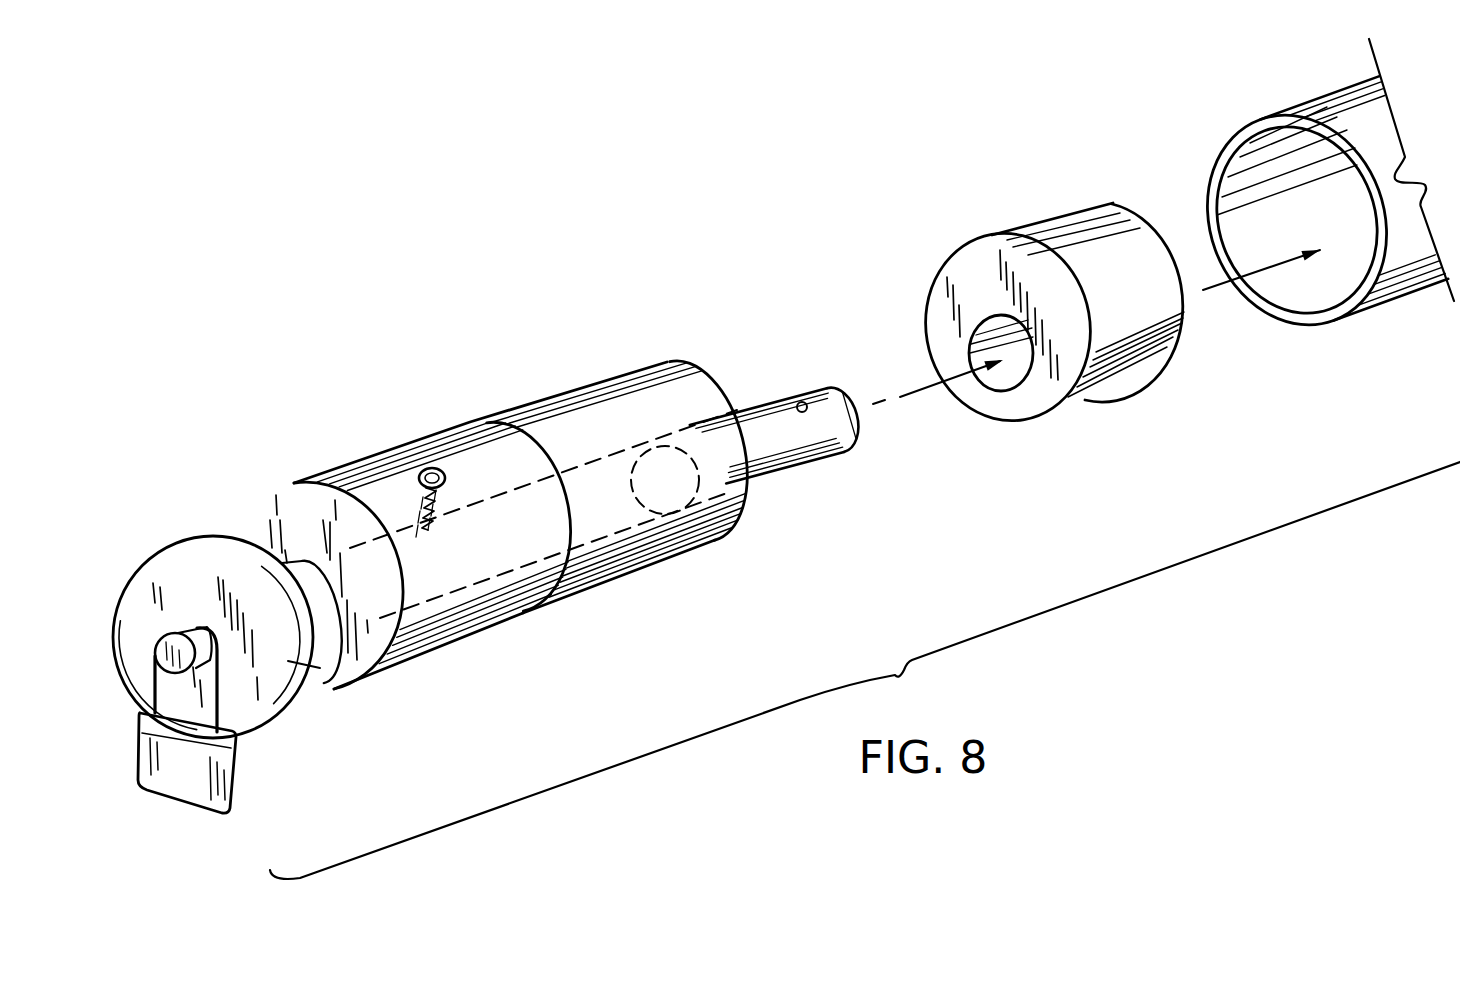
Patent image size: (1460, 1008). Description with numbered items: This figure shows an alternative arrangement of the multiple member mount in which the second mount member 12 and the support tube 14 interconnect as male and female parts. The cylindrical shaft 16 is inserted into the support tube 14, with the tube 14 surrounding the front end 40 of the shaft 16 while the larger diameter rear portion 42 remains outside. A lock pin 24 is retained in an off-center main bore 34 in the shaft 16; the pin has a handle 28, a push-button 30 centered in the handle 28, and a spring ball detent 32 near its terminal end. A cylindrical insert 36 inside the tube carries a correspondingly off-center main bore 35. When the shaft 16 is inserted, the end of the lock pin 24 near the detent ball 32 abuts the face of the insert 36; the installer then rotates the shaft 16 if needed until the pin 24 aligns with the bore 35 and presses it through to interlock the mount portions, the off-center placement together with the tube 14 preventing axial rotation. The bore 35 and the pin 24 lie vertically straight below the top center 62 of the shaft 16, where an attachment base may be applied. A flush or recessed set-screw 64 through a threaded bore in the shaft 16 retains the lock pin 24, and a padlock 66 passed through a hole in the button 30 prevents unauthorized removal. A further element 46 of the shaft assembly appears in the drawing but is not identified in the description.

The second mount member 12 is at (614, 300).
The support tube 14 is at (1313, 107).
The cylindrical shaft 16 is at (552, 398).
The lock pin 24 is at (773, 400).
The handle 28 is at (223, 540).
The push-button 30 is at (176, 630).
The spring ball detent 32 is at (808, 392).
The main bore 34 is at (347, 610).
The main bore 35 is at (1017, 368).
The cylindrical insert 36 is at (1020, 222).
The front end of shaft 40 is at (740, 507).
The rear portion of shaft 42 is at (452, 648).
The sleeve portion 46 is at (688, 365).
The top center of shaft 62 is at (420, 447).
The set-screw 64 is at (447, 478).
The padlock 66 is at (187, 775).